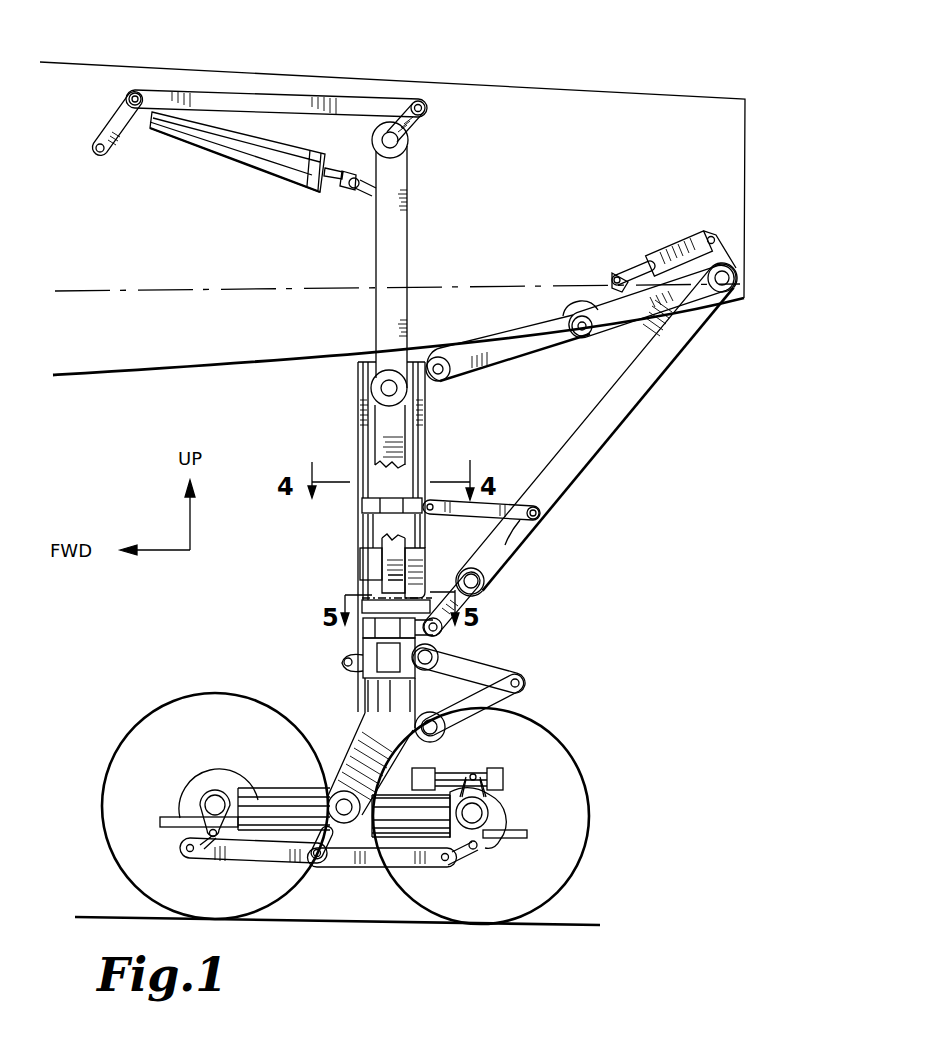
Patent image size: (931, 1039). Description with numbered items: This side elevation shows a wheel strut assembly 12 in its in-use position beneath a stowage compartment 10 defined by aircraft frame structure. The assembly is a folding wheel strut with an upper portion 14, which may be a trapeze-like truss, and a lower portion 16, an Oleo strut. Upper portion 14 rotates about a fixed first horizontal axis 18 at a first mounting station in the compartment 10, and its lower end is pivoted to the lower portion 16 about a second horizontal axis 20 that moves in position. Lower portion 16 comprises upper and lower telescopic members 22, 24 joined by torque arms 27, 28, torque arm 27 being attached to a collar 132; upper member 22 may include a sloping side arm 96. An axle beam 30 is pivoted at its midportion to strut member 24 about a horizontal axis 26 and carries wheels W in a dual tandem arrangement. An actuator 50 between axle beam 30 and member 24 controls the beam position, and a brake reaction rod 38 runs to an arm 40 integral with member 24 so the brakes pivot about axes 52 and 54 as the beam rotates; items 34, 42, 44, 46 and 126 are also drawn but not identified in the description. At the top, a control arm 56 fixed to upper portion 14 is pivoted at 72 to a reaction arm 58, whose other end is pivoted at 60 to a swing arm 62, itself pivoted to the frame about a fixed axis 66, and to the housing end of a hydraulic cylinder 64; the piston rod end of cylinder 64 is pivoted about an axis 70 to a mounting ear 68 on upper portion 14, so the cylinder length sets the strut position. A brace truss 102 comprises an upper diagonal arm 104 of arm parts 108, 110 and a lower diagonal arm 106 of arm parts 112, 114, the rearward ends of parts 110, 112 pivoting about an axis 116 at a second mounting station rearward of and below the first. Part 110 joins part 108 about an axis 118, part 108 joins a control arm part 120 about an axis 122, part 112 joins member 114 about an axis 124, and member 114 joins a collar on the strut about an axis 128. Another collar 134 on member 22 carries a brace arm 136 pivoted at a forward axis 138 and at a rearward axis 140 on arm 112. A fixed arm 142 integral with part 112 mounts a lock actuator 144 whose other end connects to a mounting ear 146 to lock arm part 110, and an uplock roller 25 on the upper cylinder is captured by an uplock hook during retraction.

The stowage compartment 10 is at (565, 100).
The wheel strut assembly 12 is at (346, 436).
The upper strut portion 14 is at (398, 228).
The lower strut portion 16 is at (424, 448).
The first horizontal axis 18 is at (400, 145).
The second horizontal axis 20 is at (372, 388).
The upper telescopic member 22 is at (368, 538).
The lower telescopic member 24 is at (366, 712).
The uplock roller 25 is at (343, 663).
The horizontal axis 26 is at (380, 790).
The torque arm 27 is at (490, 672).
The torque arm 28 is at (500, 705).
The axle beam 30 is at (280, 789).
The forward axle 34 is at (185, 838).
The brake reaction rod 38 is at (227, 863).
The arm 40 is at (335, 860).
The lower link 42 is at (435, 868).
The pivot 44 is at (476, 862).
The aft axle 46 is at (495, 843).
The actuator 50 is at (445, 772).
The brake pivot axis 52 is at (482, 812).
The brake pivot axis 54 is at (205, 795).
The control arm 56 is at (425, 115).
The reaction arm 58 is at (278, 96).
The pivot point 60 is at (130, 96).
The swing arm 62 is at (110, 127).
The hydraulic cylinder 64 is at (208, 140).
The fixed horizontal axis 66 is at (100, 152).
The mounting ear 68 is at (362, 200).
The horizontal axis 70 is at (348, 186).
The pivot 72 is at (421, 103).
The side arm 96 is at (386, 578).
The truss 102 is at (608, 450).
The upper diagonal arm 104 is at (497, 313).
The lower diagonal arm 106 is at (650, 407).
The truss arm part 108 is at (525, 346).
The truss arm part 110 is at (640, 322).
The truss arm part 112 is at (667, 352).
The truss arm member 114 is at (478, 596).
The axis 116 is at (737, 277).
The axis 118 is at (562, 317).
The control arm part 120 is at (446, 378).
The axis 122 is at (447, 346).
The axis 124 is at (485, 581).
The collar 126 is at (358, 628).
The axis 128 is at (446, 627).
The collar 132 is at (378, 680).
The collar 134 is at (362, 505).
The brace arm 136 is at (528, 530).
The axis 138 is at (436, 515).
The axis 140 is at (540, 513).
The fixed arm 142 is at (720, 250).
The lock actuator 144 is at (663, 247).
The mounting ear 146 is at (608, 292).
The wheels W is at (150, 722).